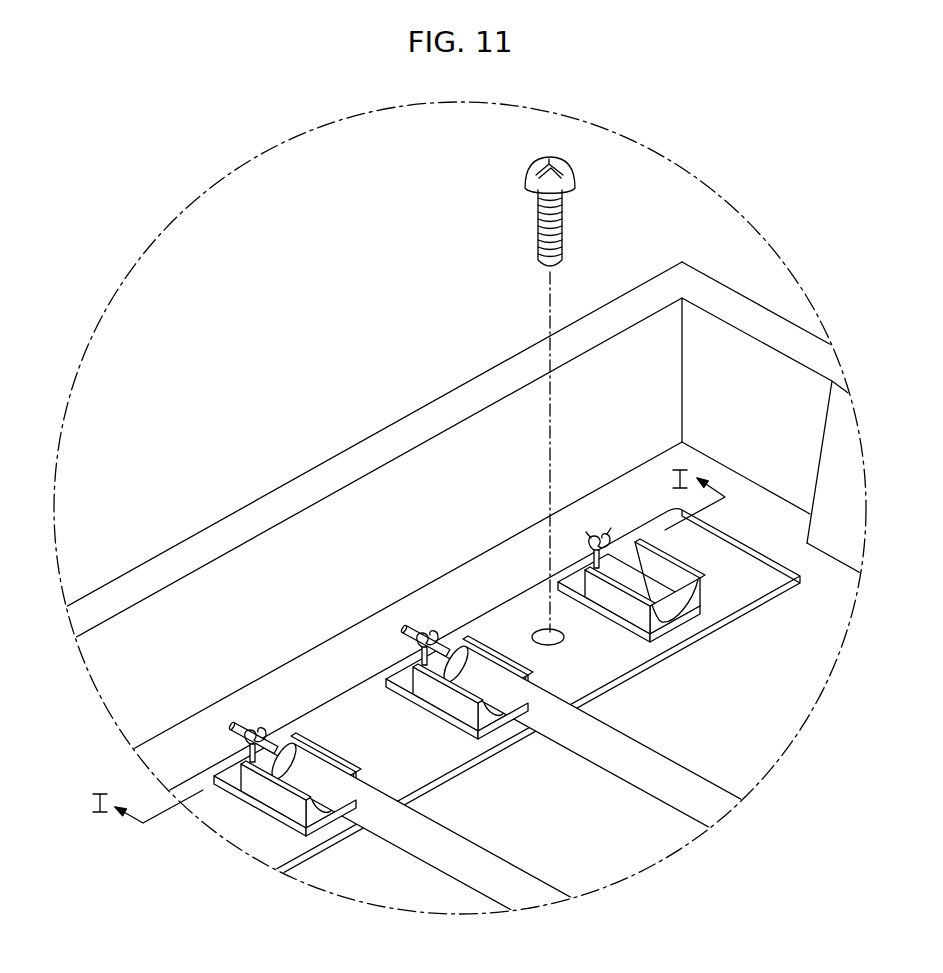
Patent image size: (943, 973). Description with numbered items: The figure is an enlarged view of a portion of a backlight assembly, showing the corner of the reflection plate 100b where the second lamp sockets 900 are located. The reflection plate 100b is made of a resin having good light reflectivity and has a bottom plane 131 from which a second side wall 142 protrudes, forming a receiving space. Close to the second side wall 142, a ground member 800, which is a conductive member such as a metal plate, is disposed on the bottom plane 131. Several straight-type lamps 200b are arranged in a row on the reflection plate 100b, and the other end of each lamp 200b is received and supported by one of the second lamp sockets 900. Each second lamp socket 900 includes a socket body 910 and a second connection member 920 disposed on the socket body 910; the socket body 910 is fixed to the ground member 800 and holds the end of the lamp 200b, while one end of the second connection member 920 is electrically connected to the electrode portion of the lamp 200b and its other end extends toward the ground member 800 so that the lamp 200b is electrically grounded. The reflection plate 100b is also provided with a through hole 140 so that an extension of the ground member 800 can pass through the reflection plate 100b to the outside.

The reflection plate 100b is at (455, 537).
The second side wall 142 is at (270, 505).
The bottom plane 131 is at (751, 756).
The through hole 140 is at (751, 551).
The ground member 800 is at (476, 708).
The second lamp socket 900 is at (676, 575).
The socket body 910 is at (697, 604).
The second connection member 920 is at (603, 533).
The straight-type lamp 200b is at (583, 748).